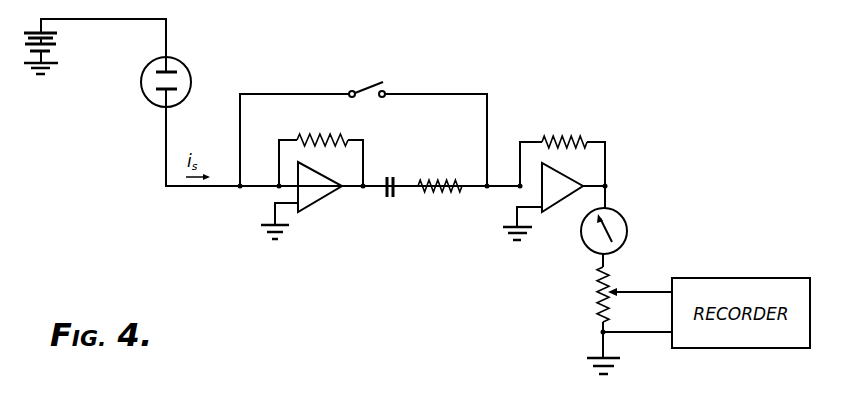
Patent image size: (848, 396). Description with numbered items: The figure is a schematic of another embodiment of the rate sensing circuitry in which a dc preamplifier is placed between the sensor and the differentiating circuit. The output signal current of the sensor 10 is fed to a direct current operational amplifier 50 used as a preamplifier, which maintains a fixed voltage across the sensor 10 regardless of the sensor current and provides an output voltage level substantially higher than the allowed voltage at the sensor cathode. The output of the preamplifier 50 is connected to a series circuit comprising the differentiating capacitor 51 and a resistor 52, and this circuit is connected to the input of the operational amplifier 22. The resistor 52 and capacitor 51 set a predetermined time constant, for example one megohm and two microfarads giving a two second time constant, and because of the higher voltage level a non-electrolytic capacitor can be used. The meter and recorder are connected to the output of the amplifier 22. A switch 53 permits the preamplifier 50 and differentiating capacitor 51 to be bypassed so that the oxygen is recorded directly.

The sensor 10 is at (177, 57).
The operational amplifier 22 is at (556, 208).
The direct current operational amplifier 50 is at (315, 202).
The differentiating capacitor 51 is at (393, 177).
The resistor 52 is at (430, 190).
The switch 53 is at (366, 84).